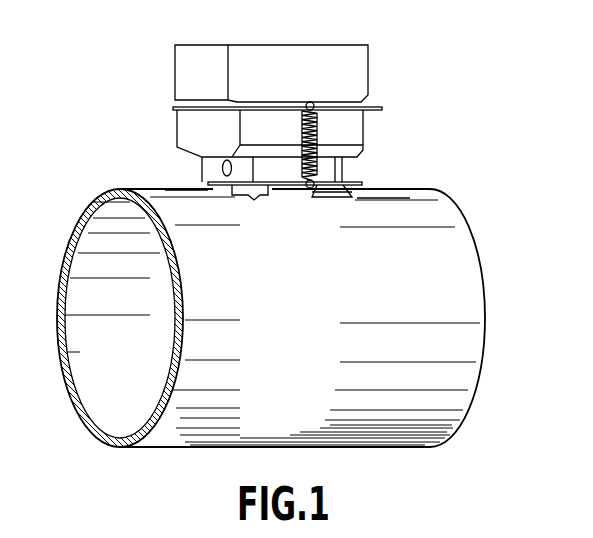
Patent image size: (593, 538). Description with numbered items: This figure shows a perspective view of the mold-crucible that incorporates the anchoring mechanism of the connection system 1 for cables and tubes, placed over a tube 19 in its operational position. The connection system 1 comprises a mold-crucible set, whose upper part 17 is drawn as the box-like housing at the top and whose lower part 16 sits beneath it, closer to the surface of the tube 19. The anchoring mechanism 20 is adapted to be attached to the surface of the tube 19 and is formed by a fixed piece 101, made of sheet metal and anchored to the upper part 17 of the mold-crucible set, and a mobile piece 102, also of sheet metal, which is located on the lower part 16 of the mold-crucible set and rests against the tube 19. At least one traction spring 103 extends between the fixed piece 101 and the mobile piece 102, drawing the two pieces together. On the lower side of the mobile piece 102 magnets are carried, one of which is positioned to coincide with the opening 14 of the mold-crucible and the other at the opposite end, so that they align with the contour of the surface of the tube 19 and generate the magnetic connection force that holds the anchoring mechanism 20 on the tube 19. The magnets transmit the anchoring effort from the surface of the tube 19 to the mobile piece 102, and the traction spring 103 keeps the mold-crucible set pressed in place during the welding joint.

The connection system 1 is at (389, 154).
The opening 14 is at (222, 168).
The lower part 16 is at (212, 163).
The upper part 17 is at (185, 72).
The tube 19 is at (458, 285).
The anchoring mechanism 20 is at (120, 103).
The fixed piece 101 is at (373, 107).
The mobile piece 102 is at (362, 183).
The traction spring 103 is at (315, 148).